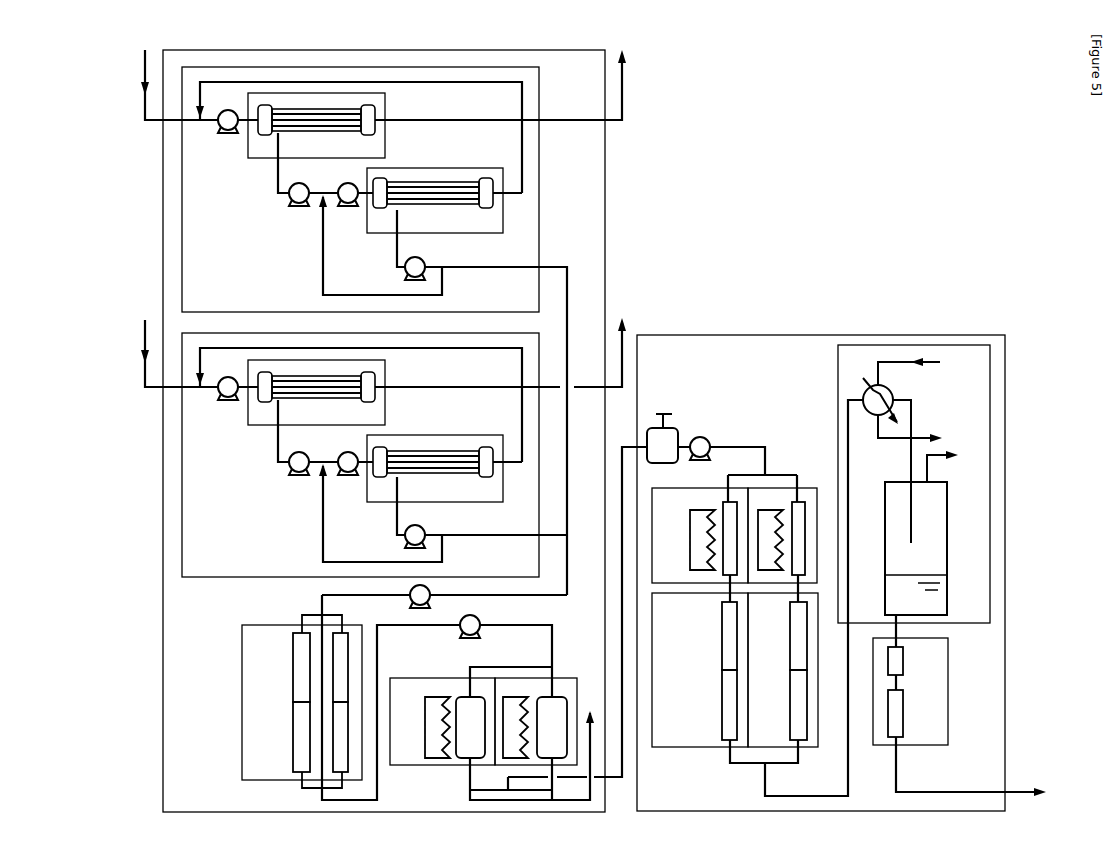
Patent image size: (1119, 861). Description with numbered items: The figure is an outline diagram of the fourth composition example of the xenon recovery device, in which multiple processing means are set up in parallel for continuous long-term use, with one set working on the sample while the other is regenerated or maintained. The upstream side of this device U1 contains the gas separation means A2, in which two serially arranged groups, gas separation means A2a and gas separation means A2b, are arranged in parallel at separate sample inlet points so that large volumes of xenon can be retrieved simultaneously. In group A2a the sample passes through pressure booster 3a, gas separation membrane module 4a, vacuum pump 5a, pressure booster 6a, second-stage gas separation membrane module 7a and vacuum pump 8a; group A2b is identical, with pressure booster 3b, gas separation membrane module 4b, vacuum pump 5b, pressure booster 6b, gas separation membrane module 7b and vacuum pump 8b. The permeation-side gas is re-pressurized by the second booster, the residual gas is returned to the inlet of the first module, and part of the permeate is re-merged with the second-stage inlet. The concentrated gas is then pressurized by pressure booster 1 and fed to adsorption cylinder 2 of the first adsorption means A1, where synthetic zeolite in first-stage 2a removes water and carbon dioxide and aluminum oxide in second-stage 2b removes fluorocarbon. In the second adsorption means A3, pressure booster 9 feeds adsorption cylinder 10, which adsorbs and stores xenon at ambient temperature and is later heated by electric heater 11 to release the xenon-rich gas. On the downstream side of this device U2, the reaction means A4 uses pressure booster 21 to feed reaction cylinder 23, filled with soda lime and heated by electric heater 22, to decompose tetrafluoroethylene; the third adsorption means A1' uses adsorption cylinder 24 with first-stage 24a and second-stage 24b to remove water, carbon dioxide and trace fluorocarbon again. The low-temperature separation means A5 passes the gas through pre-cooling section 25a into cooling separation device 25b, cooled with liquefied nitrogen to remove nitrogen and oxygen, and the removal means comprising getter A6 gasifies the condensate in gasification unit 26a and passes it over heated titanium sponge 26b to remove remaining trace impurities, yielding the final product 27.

The pressure booster 1 is at (427, 598).
The adsorption cylinder 2 is at (298, 701).
The first-stage 2a is at (310, 667).
The second-stage 2b is at (310, 737).
The pressure booster 3a is at (229, 133).
The pressure booster 3b is at (230, 401).
The gas separation membrane module 4a is at (316, 131).
The gas separation membrane module 4b is at (316, 398).
The vacuum pump 5a is at (299, 208).
The vacuum pump 5b is at (299, 477).
The pressure booster 6a is at (348, 208).
The pressure booster 6b is at (348, 477).
The gas separation membrane module 7a is at (433, 205).
The gas separation membrane module 7b is at (433, 473).
The vacuum pump 8a is at (422, 261).
The vacuum pump 8b is at (422, 528).
The pressure booster 9 is at (470, 637).
The adsorption cylinder 10 is at (506, 720).
The electric heater 11 is at (426, 727).
The pressure booster 21 is at (700, 438).
The electric heater 22 is at (725, 540).
The reaction cylinder 23 is at (751, 535).
The adsorption cylinder 24 is at (733, 671).
The first-stage 24a is at (748, 636).
The second-stage 24b is at (748, 705).
The pre-cooling section 25a is at (902, 450).
The cooling separation device 25b is at (931, 533).
The gasification unit 26a is at (910, 661).
The titanium sponge 26b is at (910, 713).
The final product 27 is at (1035, 782).
The first adsorption means A1 is at (305, 687).
The third adsorption means A1' is at (741, 682).
The gas separation means A2 is at (375, 297).
The gas separation means A2a is at (378, 189).
The gas separation means A2b is at (360, 468).
The second adsorption means A3 is at (487, 712).
The reaction means A4 is at (738, 527).
The low-temperature separation means A5 is at (901, 484).
The removal means comprising getter A6 is at (922, 691).
The upstream side of this device U1 is at (397, 431).
The downstream side of this device U2 is at (821, 565).